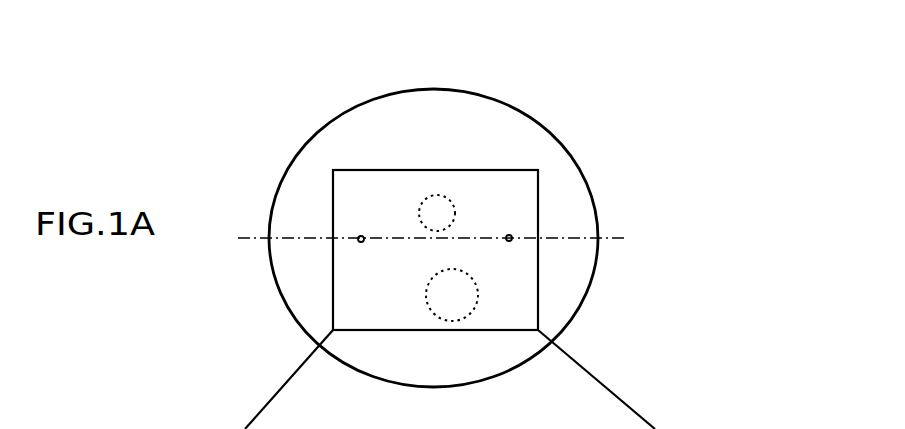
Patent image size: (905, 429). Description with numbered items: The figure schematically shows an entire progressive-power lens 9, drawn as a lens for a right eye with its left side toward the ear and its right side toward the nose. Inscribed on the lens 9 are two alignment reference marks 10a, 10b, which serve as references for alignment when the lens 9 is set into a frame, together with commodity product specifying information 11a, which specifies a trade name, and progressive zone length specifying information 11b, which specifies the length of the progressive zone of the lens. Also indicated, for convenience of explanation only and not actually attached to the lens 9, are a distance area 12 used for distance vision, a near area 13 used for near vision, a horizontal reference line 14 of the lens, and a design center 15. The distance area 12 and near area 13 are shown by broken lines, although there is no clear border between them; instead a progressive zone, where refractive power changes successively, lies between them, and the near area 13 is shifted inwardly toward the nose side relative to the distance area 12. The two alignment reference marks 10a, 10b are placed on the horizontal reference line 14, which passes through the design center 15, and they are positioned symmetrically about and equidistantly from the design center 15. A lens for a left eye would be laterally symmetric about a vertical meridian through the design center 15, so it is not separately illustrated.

The progressive-power lens 9 is at (542, 125).
The alignment reference mark 10a is at (360, 236).
The alignment reference mark 10b is at (512, 237).
The commodity product specifying information 11a is at (359, 250).
The progressive zone length specifying information 11b is at (518, 253).
The distance area 12 is at (439, 196).
The near area 13 is at (478, 293).
The horizontal reference line 14 is at (625, 238).
The design center 15 is at (431, 242).